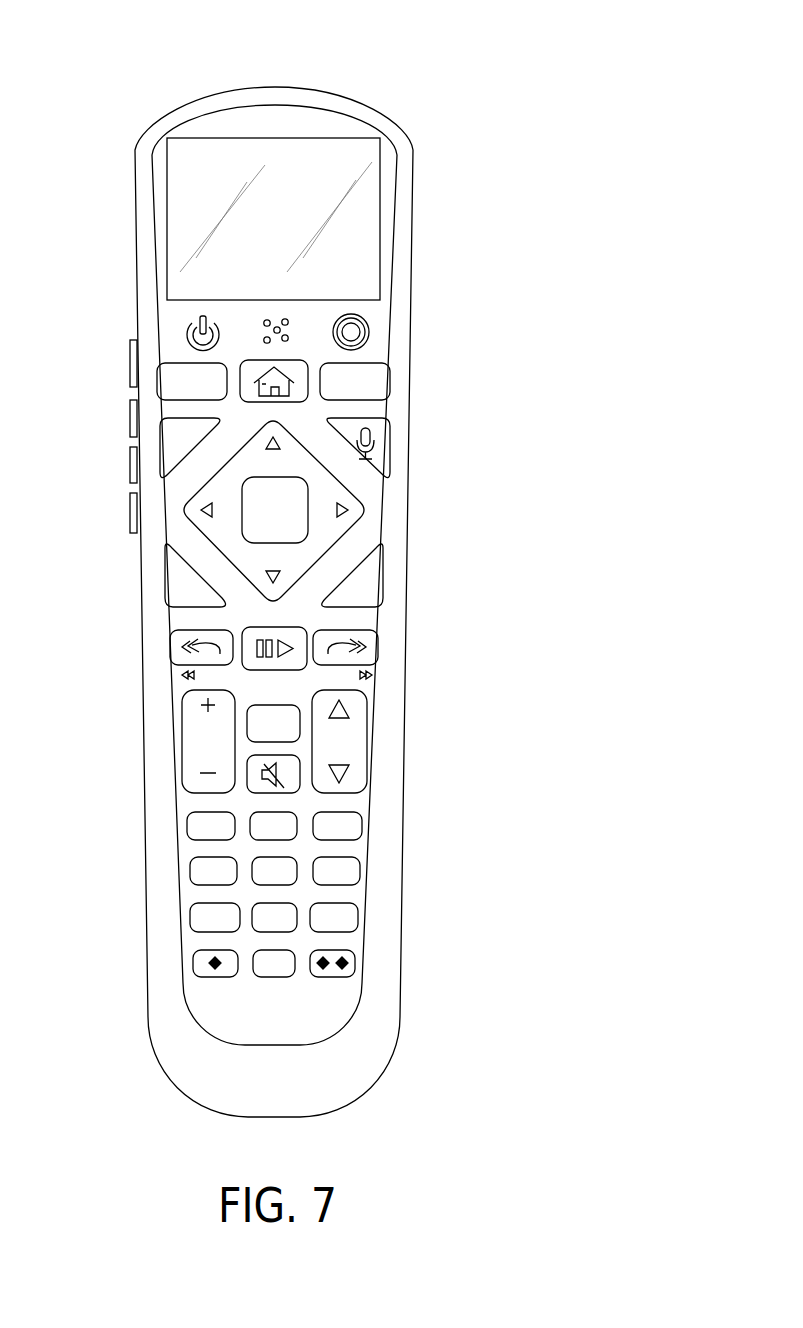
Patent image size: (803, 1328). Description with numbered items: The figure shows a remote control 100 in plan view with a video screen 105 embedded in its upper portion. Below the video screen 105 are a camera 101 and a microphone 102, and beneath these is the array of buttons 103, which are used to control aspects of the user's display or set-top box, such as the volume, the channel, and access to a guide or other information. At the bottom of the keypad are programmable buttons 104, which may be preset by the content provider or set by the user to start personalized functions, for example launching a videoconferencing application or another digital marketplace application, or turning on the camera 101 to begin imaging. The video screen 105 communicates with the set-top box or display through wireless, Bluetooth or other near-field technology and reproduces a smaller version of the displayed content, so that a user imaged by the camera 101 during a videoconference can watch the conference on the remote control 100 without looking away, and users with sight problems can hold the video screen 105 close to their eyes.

The remote control 100 is at (271, 602).
The camera 101 is at (353, 332).
The microphone 102 is at (270, 315).
The buttons 103 is at (390, 626).
The programmable buttons 104 is at (227, 974).
The video screen 105 is at (307, 163).